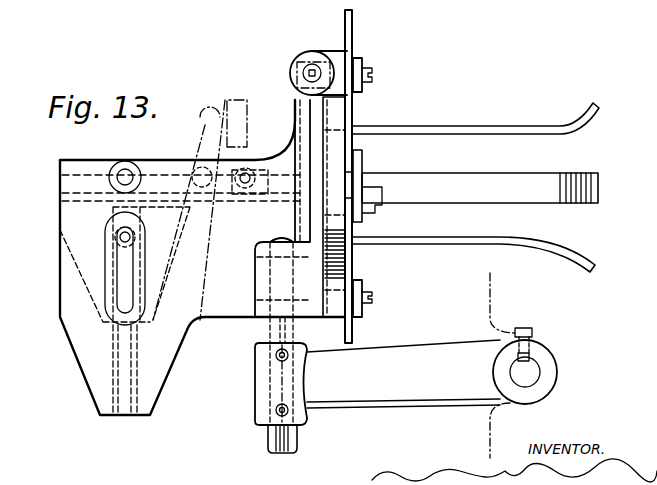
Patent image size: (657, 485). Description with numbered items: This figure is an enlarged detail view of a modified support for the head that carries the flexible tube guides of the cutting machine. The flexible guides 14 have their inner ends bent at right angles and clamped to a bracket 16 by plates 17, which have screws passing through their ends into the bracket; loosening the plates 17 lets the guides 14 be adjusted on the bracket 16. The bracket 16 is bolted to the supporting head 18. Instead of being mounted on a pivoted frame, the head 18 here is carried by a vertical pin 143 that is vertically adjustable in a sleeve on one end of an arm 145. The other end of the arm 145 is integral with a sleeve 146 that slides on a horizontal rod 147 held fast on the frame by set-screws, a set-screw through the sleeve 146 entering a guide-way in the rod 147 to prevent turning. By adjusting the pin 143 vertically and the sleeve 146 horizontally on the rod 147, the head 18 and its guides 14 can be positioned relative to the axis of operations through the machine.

The flexible guides 14 is at (597, 108).
The bracket 16 is at (345, 258).
The plates 17 is at (352, 33).
The supporting head 18 is at (90, 342).
The vertical pin 143 is at (265, 450).
The arm 145 is at (406, 404).
The sleeve 146 is at (553, 380).
The horizontal rod 147 is at (525, 372).